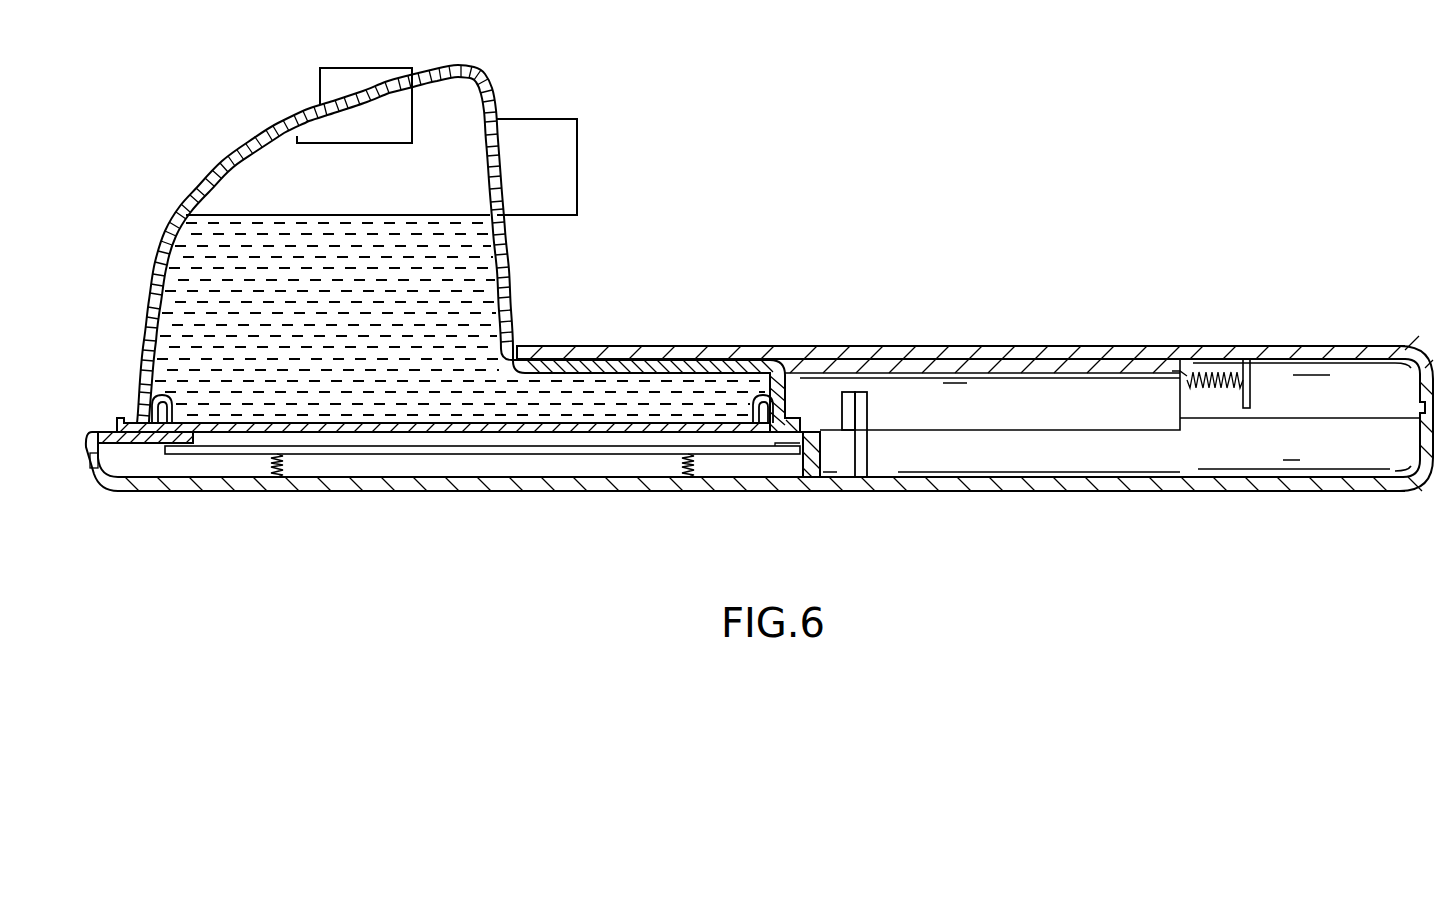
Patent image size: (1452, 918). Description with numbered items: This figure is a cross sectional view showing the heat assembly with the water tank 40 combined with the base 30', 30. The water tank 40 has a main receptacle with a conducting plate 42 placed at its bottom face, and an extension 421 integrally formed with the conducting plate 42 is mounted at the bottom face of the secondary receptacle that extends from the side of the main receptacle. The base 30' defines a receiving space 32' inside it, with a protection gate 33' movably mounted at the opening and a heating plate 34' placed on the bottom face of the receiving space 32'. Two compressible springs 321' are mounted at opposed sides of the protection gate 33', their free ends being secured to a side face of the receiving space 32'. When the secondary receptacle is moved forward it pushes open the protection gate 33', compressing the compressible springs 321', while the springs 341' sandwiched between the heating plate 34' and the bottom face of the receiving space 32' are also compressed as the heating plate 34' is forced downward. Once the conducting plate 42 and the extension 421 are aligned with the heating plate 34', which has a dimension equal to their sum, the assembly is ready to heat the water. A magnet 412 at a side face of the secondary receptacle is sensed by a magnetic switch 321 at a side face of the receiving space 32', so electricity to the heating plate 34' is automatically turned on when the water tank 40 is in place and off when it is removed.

The water tank 40 is at (538, 97).
The conducting plate 42 is at (531, 425).
The extension 421 is at (683, 422).
The magnet 412 is at (791, 384).
The protection gate 33' is at (971, 387).
The compressible springs 321' is at (1215, 348).
The base 30' is at (1313, 359).
The magnetic switch 321 is at (896, 431).
The receiving space 32' is at (1102, 445).
The springs 341' is at (484, 498).
The heating plate 34' is at (519, 491).
The base 30 is at (745, 514).